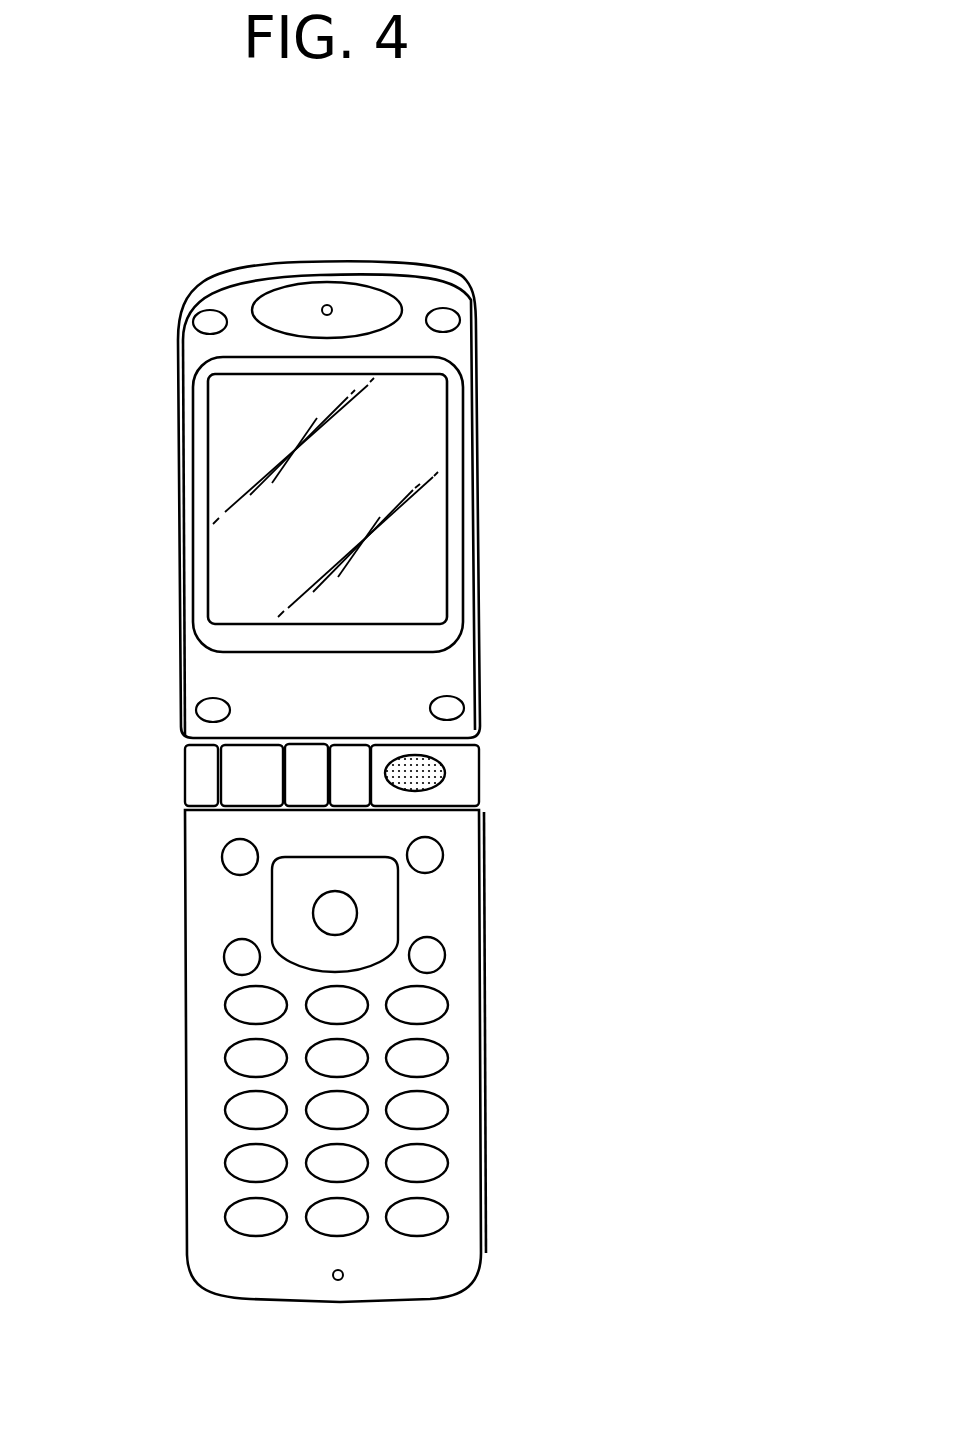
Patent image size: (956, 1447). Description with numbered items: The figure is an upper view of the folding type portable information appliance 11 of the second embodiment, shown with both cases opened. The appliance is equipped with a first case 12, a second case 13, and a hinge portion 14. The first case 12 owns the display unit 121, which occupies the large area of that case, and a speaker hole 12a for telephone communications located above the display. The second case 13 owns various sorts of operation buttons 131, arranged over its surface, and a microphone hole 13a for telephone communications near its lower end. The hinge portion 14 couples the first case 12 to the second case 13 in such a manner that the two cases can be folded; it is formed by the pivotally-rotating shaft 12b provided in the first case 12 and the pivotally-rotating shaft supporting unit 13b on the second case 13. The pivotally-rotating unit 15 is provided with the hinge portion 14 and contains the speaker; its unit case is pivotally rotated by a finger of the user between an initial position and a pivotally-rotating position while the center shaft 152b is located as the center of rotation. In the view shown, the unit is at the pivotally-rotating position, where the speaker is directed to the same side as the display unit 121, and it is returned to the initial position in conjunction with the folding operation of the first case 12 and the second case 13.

The folding type portable information appliance 11 is at (345, 167).
The first case 12 is at (481, 662).
The speaker hole 12a is at (328, 304).
The pivotally-rotating shaft 12b is at (258, 745).
The display unit 121 is at (437, 547).
The second case 13 is at (495, 873).
The microphone hole 13a is at (337, 1282).
The pivotally-rotating shaft supporting unit 13b is at (190, 782).
The operation buttons 131 is at (383, 905).
The hinge portion 14 is at (500, 784).
The pivotally-rotating unit 15 is at (361, 761).
The center shaft 152b is at (445, 772).